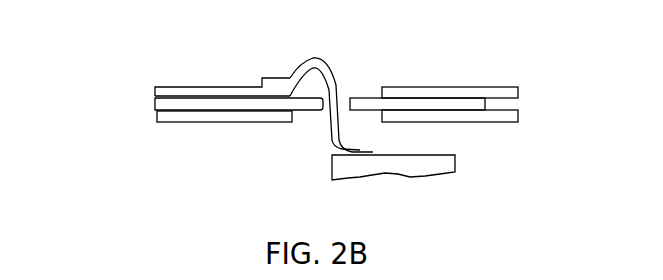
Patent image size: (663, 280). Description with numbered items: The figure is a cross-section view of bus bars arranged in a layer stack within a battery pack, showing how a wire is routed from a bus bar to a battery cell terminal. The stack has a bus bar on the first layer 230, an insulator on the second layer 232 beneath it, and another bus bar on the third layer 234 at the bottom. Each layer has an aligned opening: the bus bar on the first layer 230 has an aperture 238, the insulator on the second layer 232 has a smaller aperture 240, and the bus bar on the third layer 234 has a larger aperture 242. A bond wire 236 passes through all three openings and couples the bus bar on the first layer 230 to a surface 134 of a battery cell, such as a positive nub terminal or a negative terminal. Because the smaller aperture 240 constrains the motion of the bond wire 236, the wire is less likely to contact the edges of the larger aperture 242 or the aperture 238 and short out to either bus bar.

The first layer 230 is at (153, 90).
The second layer 232 is at (187, 101).
The third layer 234 is at (196, 121).
The bond wire 236 is at (316, 55).
The aperture 238 is at (500, 88).
The smaller aperture 240 is at (430, 101).
The larger aperture 242 is at (500, 122).
The surface 134 is at (350, 174).